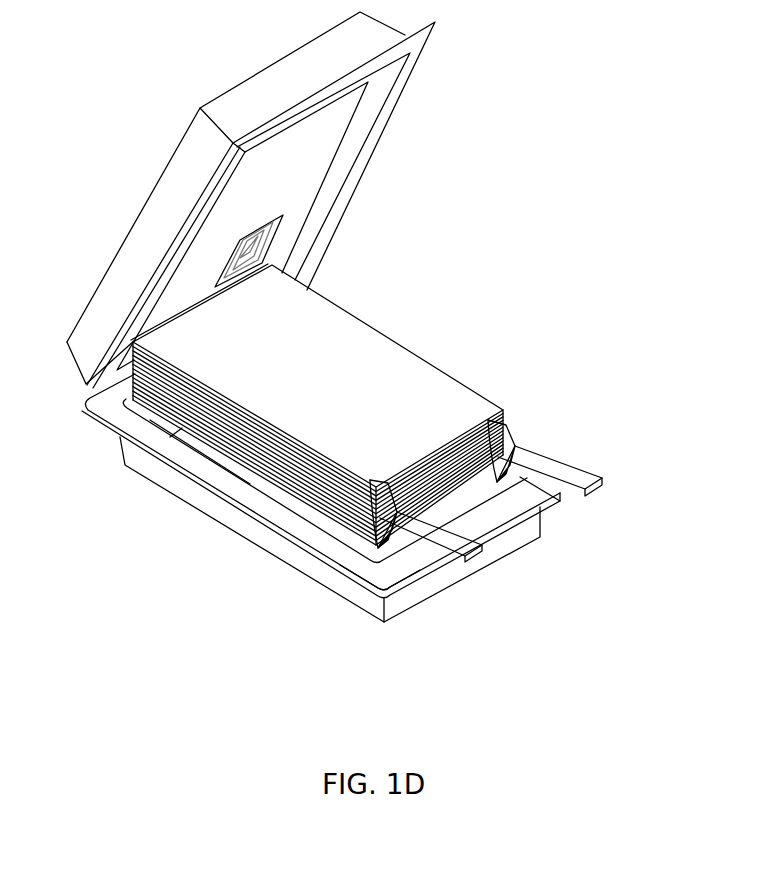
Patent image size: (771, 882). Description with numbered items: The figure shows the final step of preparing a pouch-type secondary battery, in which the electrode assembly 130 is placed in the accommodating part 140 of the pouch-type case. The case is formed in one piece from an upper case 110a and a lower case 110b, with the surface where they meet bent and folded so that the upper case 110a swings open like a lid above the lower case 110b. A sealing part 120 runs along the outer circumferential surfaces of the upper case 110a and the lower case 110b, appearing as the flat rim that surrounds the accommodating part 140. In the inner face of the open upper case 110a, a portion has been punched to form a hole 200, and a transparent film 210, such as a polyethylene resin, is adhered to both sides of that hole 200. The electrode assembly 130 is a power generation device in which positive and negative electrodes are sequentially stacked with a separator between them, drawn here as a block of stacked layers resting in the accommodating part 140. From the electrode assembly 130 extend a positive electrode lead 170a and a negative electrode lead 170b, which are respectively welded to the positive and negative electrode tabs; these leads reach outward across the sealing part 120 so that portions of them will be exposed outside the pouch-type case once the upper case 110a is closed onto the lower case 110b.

The upper case 110a is at (150, 242).
The lower case 110b is at (250, 534).
The sealing part 120 is at (392, 572).
The electrode assembly 130 is at (428, 323).
The accommodating part 140 is at (222, 462).
The positive electrode lead 170a is at (482, 553).
The negative electrode lead 170b is at (597, 481).
The hole 200 is at (247, 248).
The transparent film 210 is at (277, 222).